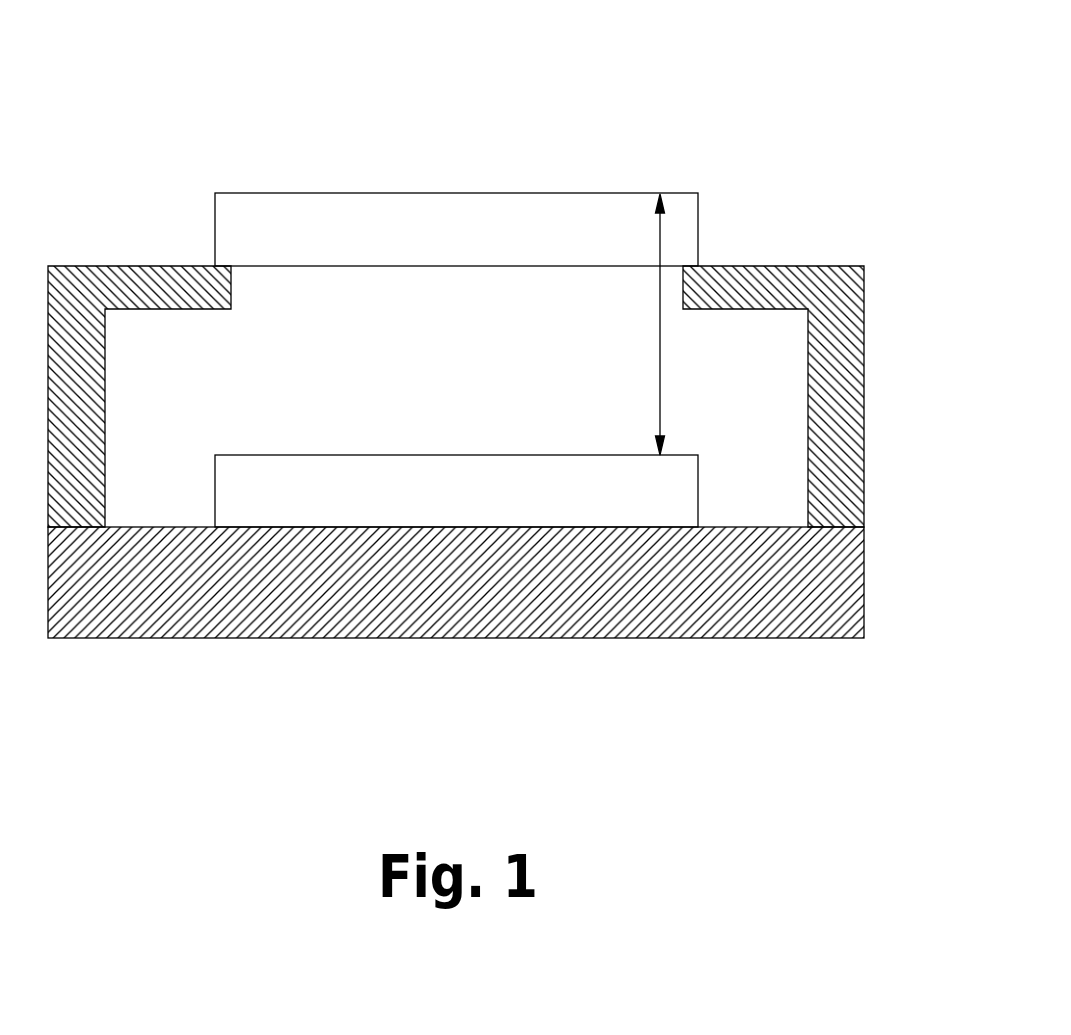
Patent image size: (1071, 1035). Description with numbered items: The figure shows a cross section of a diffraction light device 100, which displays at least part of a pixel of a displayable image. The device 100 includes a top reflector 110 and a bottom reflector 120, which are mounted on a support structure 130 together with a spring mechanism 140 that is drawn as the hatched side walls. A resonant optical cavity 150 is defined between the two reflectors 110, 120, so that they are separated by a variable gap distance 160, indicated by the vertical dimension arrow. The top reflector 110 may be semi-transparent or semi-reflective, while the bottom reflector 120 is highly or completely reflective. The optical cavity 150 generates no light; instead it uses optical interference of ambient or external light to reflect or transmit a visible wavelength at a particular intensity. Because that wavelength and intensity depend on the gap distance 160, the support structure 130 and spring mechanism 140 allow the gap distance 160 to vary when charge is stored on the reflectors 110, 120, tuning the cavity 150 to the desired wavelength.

The diffraction light device 100 is at (310, 66).
The top reflector 110 is at (457, 192).
The bottom reflector 120 is at (473, 509).
The support structure 130 is at (572, 604).
The spring mechanism 140 is at (864, 410).
The resonant optical cavity 150 is at (284, 381).
The variable gap distance 160 is at (660, 383).